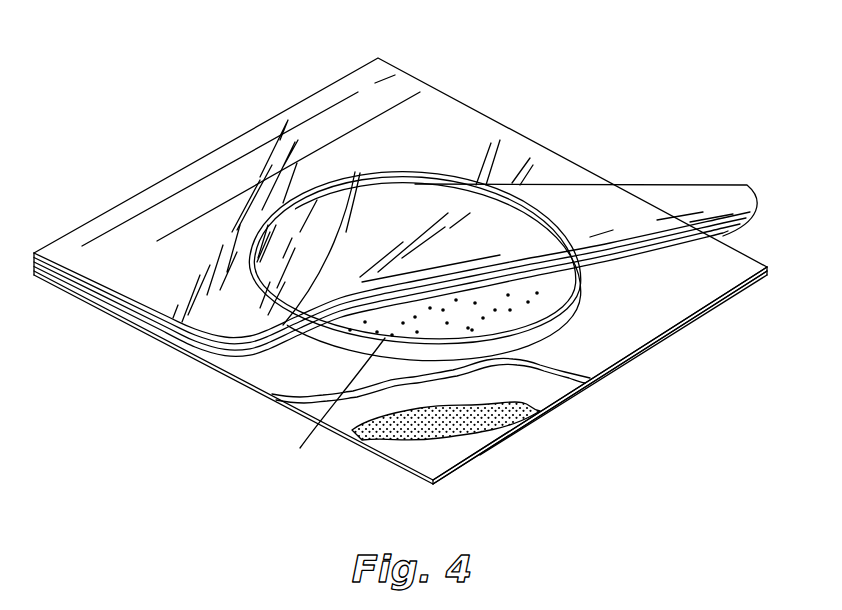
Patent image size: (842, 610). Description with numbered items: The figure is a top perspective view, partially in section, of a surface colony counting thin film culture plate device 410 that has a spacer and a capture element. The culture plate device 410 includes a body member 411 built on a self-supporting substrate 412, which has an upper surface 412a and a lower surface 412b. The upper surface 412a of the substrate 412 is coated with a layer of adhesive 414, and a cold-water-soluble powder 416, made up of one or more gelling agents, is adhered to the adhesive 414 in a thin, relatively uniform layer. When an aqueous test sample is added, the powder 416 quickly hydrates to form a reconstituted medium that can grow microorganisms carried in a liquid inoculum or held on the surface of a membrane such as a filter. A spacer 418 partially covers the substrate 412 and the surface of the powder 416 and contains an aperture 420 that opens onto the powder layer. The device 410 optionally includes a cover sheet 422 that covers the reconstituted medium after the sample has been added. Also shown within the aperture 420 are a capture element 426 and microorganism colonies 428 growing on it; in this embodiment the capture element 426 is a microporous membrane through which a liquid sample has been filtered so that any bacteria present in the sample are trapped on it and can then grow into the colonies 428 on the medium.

The thin film culture plate device 410 is at (626, 148).
The body member 411 is at (86, 311).
The self-supporting substrate 412 is at (455, 484).
The upper surface 412a is at (466, 440).
The lower surface 412b is at (426, 480).
The adhesive 414 is at (358, 430).
The cold-water-soluble powder 416 is at (550, 392).
The spacer 418 is at (722, 284).
The aperture 420 is at (592, 287).
The cover sheet 422 is at (742, 192).
The capture element 426 is at (549, 303).
The microorganism colonies 428 is at (377, 332).